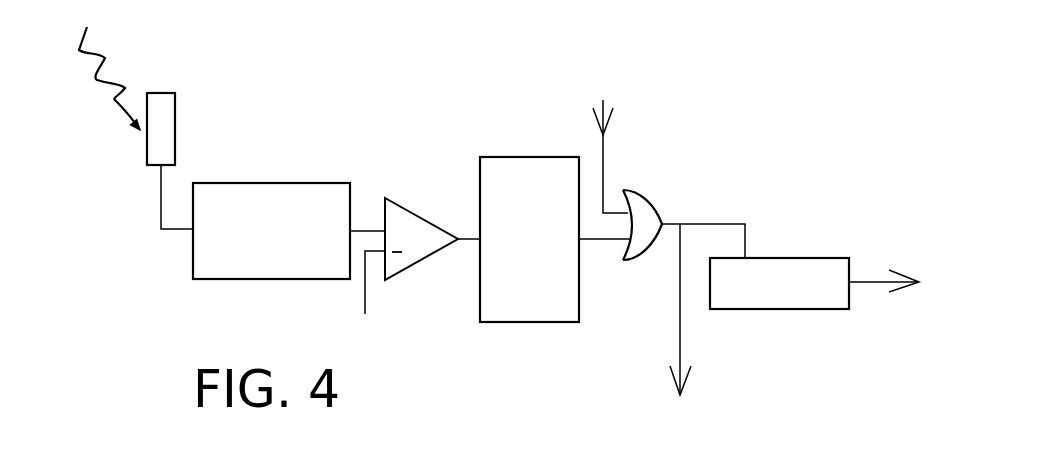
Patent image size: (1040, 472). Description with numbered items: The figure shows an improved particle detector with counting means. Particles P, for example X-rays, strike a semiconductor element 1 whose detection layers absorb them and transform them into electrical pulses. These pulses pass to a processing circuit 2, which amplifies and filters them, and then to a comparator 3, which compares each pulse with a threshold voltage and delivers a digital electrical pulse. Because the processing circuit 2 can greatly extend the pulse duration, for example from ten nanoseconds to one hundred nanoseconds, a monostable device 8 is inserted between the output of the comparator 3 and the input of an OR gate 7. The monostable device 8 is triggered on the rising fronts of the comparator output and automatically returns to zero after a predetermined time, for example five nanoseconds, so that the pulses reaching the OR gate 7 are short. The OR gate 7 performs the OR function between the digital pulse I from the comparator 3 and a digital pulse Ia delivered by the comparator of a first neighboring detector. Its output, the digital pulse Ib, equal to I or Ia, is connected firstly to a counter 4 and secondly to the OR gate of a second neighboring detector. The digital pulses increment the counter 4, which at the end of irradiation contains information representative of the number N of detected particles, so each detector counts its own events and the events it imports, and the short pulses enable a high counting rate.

The particles P is at (105, 55).
The semiconductor element 1 is at (175, 122).
The processing circuit 2 is at (323, 190).
The comparator 3 is at (420, 230).
The monostable device 8 is at (513, 322).
The digital pulse Ia is at (603, 100).
The OR gate 7 is at (648, 215).
The digital pulse I is at (607, 243).
The digital pulse Ib is at (680, 345).
The counter 4 is at (817, 265).
The number of detected particles N is at (904, 269).